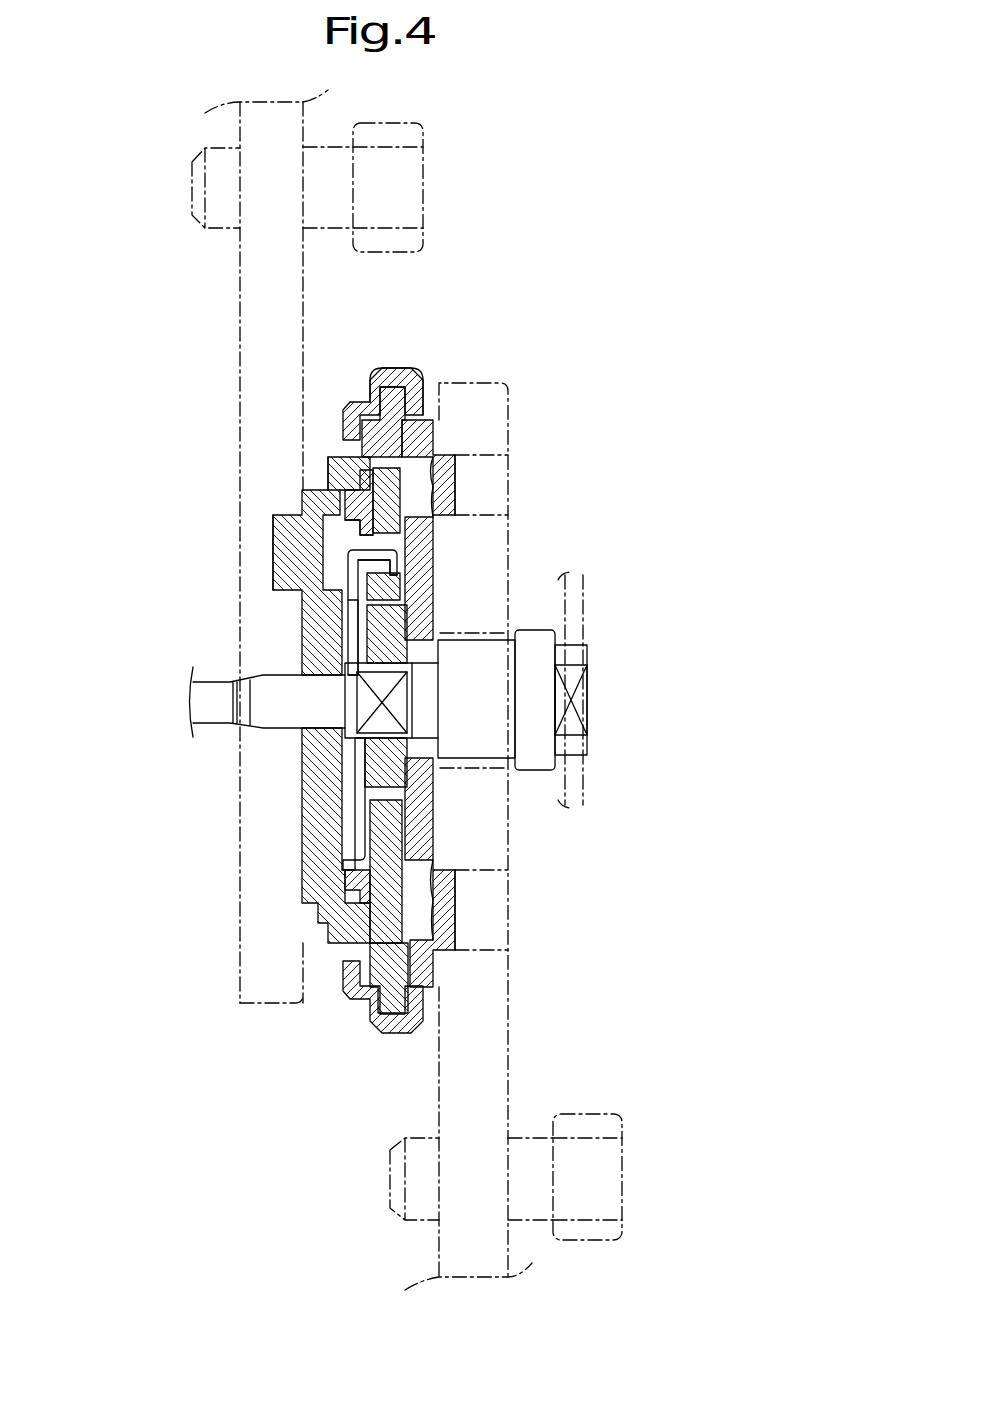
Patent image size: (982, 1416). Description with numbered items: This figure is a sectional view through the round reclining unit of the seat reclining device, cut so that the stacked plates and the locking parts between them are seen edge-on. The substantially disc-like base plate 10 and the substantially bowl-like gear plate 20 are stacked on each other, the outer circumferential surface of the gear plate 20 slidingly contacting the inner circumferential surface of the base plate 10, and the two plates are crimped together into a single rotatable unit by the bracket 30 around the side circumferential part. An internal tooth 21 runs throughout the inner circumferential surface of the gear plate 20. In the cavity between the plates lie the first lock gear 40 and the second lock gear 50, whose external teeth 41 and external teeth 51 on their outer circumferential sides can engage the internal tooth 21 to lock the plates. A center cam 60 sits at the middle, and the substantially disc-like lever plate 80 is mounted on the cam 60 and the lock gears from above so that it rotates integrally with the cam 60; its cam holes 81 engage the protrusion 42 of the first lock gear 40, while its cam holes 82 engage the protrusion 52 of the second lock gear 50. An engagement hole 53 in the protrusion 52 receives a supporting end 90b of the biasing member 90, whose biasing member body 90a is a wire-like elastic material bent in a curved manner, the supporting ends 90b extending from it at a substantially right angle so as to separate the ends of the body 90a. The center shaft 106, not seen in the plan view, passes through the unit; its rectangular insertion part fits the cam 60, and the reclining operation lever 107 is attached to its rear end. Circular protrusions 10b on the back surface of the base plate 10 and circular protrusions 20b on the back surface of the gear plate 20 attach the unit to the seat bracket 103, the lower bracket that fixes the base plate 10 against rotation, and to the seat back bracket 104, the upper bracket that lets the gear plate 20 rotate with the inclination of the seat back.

The base plate 10 is at (437, 425).
The circular protrusions 10b is at (455, 480).
The gear plate 20 is at (343, 456).
The circular protrusions 20b is at (274, 558).
The internal tooth 21 is at (378, 455).
The bracket 30 is at (397, 368).
The first lock gear 40 is at (398, 830).
The external teeth 41 is at (389, 978).
The protrusion 42 is at (345, 888).
The second lock gear 50 is at (395, 492).
The external teeth 51 is at (383, 422).
The protrusion 52 is at (345, 520).
The engagement hole 53 is at (345, 545).
The center cam 60 is at (345, 780).
The lever plate 80 is at (345, 820).
The cam holes 81 is at (345, 860).
The cam holes 82 is at (333, 488).
The biasing member 90 is at (346, 575).
The biasing member body 90a is at (335, 608).
The supporting ends 90b is at (382, 540).
The seat bracket 103 is at (508, 1057).
The seat back bracket 104 is at (240, 330).
The center shaft 106 is at (588, 708).
The reclining operation lever 107 is at (585, 770).